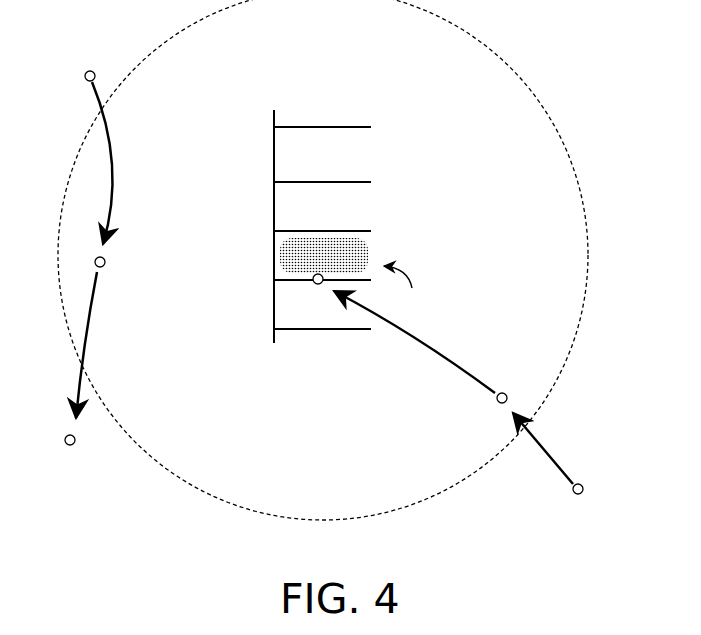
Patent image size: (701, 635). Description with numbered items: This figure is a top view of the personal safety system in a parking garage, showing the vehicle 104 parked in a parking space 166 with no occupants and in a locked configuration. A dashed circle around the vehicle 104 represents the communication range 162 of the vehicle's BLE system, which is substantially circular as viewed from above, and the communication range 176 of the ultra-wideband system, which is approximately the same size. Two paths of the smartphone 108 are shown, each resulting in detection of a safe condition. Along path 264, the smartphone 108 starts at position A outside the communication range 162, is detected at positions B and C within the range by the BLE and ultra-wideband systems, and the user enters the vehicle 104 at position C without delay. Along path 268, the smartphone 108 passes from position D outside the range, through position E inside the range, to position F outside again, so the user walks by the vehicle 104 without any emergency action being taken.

The vehicle 104 is at (367, 248).
The smartphone 108 is at (85, 74).
The communication range 162 is at (348, 260).
The parking space 166 is at (409, 289).
The communication range 176 is at (554, 117).
The path 264 is at (433, 350).
The path 268 is at (112, 178).